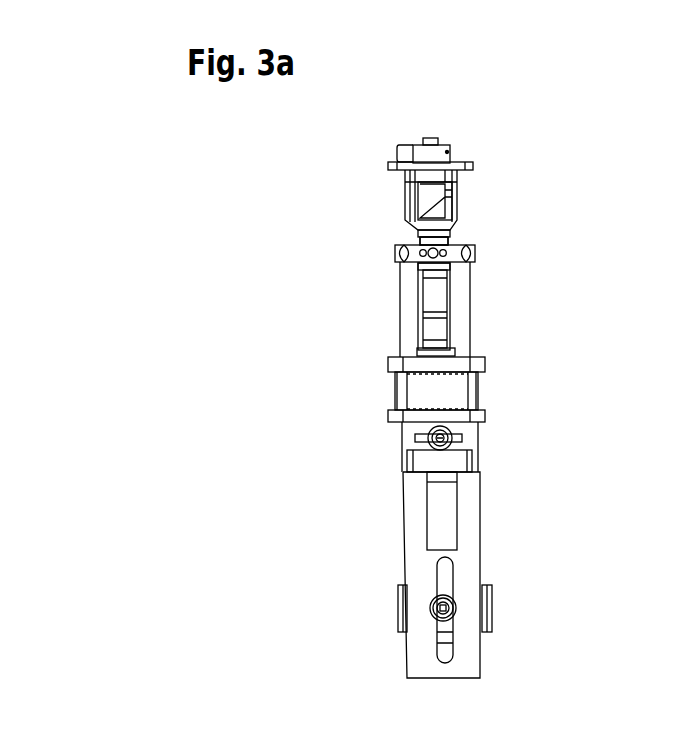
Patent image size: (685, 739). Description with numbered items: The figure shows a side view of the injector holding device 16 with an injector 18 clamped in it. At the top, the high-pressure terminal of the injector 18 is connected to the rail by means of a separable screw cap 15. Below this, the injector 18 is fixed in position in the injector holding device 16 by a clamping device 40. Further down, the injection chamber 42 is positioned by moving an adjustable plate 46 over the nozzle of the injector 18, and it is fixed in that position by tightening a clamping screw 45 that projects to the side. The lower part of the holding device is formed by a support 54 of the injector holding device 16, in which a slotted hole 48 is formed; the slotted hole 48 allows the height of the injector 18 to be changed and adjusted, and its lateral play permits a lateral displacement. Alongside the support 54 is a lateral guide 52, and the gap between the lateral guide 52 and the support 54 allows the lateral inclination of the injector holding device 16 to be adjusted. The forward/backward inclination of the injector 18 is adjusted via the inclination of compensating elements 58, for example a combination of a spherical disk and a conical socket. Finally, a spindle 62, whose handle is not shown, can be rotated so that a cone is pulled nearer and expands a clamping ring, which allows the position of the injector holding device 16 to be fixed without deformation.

The separable screw cap 15 is at (477, 140).
The injector holding device 16 is at (543, 188).
The clamping device 40 is at (498, 252).
The injector 18 is at (438, 293).
The injection chamber 42 is at (440, 392).
The adjustable plate 46 is at (470, 436).
The clamping screw 45 is at (413, 441).
The support 54 is at (470, 497).
The slotted hole 48 is at (442, 575).
The lateral guide 52 is at (488, 607).
The spindle 62 is at (452, 615).
The compensating elements 58 is at (430, 627).